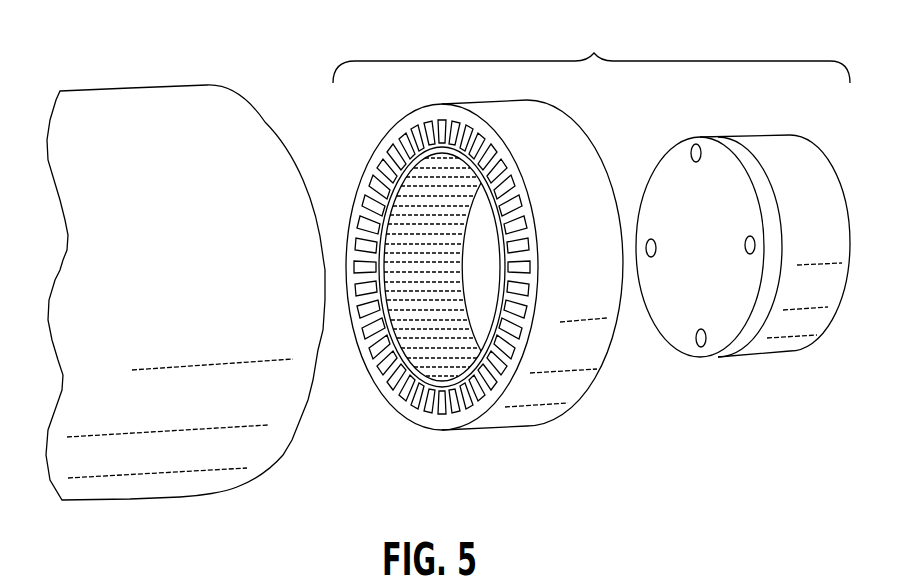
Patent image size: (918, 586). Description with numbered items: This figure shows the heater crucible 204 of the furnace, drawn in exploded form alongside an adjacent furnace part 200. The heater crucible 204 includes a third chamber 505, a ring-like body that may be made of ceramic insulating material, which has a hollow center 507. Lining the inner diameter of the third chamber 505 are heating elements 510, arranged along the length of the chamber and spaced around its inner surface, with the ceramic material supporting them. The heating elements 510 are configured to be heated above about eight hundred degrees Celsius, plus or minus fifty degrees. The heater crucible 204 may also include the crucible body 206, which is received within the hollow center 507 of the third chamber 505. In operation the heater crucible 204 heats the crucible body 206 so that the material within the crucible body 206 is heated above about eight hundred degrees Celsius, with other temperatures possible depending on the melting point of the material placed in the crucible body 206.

The housing body 200 is at (210, 289).
The heater crucible 204 is at (594, 53).
The third chamber 505 is at (551, 387).
The hollow center 507 is at (494, 281).
The heating elements 510 is at (440, 386).
The crucible body 206 is at (795, 325).